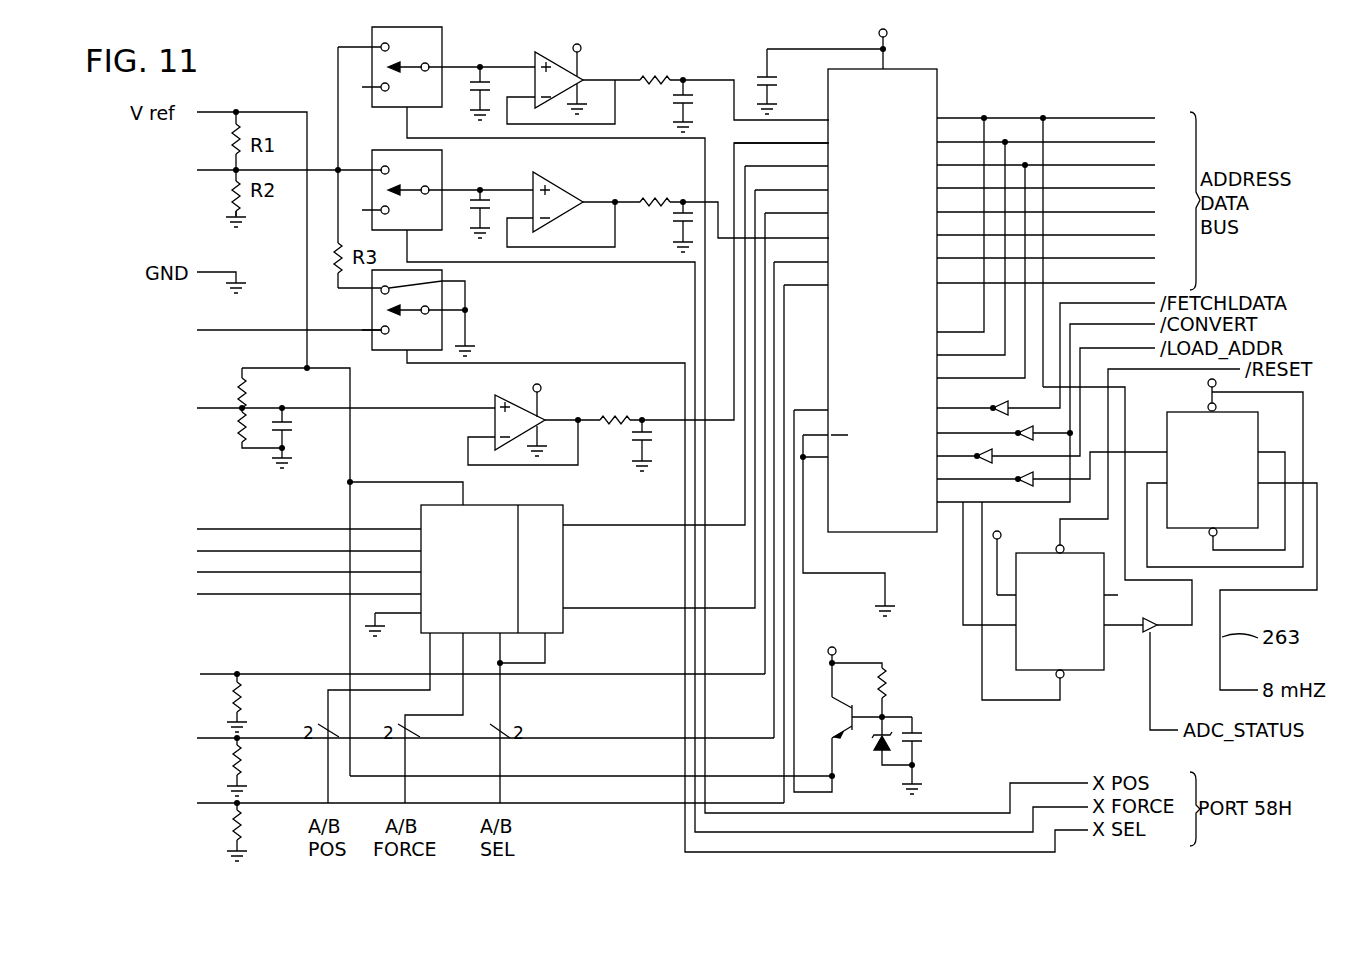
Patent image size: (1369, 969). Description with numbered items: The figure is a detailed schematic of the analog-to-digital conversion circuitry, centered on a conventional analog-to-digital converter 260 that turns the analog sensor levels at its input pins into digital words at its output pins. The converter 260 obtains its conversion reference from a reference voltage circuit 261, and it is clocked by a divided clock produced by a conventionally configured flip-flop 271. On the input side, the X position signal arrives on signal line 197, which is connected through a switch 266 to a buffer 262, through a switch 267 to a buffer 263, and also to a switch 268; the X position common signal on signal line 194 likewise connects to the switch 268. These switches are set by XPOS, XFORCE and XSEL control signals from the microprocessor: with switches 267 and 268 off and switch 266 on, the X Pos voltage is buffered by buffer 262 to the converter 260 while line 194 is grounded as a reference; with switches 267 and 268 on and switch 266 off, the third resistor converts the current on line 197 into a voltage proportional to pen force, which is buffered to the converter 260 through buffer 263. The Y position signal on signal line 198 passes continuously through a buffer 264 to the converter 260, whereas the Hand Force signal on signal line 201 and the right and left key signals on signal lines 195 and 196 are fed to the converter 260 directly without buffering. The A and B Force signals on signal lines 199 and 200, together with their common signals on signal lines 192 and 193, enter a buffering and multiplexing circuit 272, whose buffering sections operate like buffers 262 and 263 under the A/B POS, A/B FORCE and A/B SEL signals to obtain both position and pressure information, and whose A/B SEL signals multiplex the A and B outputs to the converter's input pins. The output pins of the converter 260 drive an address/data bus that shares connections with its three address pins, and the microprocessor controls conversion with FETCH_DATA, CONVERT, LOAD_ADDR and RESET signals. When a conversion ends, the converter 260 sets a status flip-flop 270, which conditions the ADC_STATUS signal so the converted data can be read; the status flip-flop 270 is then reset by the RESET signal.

The analog-to-digital converter 260 is at (910, 69).
The reference voltage circuit 261 is at (920, 724).
The buffer 262 is at (590, 64).
The buffer 263 is at (586, 186).
The buffer 264 is at (550, 412).
The switch 266 is at (372, 67).
The switch 267 is at (443, 157).
The switch 268 is at (466, 293).
The status flip-flop 270 is at (1095, 680).
The flip-flop 271 is at (1192, 412).
The buffer and multiplexer circuit 272 is at (530, 505).
The signal line 192 is at (218, 594).
The signal line 193 is at (218, 551).
The signal line 194 is at (244, 328).
The signal line 195 is at (215, 808).
The signal line 196 is at (215, 742).
The signal line 197 is at (213, 176).
The signal line 198 is at (218, 410).
The signal line 199 is at (218, 529).
The signal line 200 is at (218, 572).
The signal line 201 is at (213, 675).